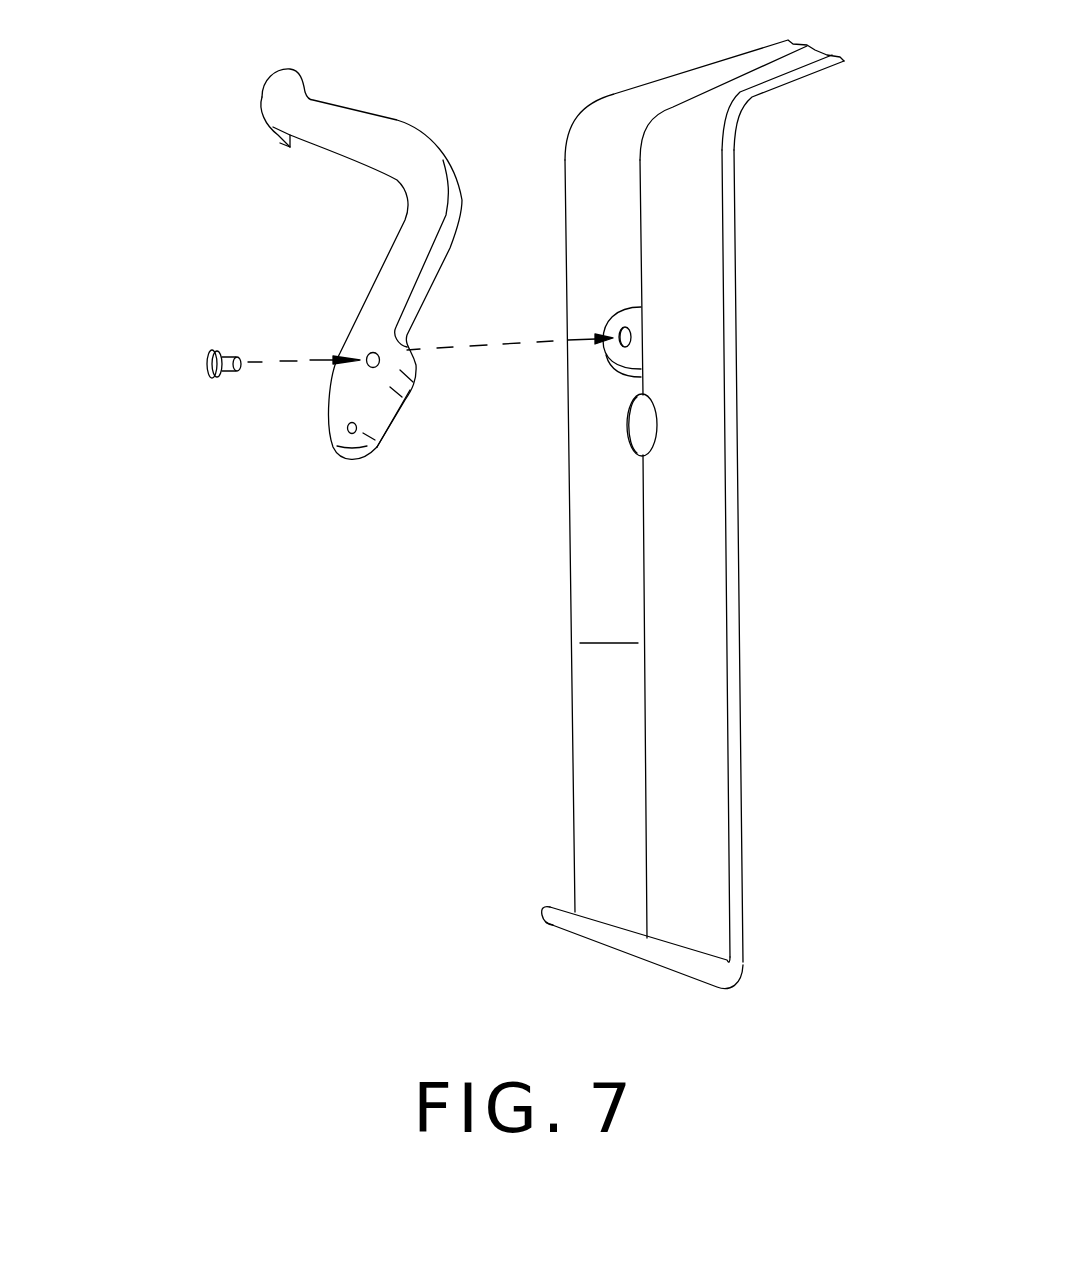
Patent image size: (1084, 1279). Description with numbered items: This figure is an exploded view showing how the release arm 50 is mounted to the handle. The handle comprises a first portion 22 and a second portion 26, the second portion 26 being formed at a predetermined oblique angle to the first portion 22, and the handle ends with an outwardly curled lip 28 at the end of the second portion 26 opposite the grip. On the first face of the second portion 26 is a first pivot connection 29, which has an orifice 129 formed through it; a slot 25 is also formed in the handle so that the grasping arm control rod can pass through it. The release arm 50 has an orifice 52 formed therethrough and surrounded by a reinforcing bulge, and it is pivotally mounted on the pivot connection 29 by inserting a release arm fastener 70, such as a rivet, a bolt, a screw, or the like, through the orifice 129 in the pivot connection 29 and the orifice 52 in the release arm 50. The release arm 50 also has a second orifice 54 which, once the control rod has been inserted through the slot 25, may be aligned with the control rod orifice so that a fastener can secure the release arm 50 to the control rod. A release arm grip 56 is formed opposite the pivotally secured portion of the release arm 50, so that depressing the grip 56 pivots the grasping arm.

The first portion 22 is at (792, 83).
The second portion 26 is at (743, 713).
The outwardly curled lip 28 is at (673, 975).
The first pivot connection 29 is at (623, 305).
The orifice 129 is at (633, 342).
The slot 25 is at (657, 425).
The release arm 50 is at (314, 274).
The release arm grip 56 is at (397, 120).
The orifice 52 is at (380, 367).
The orifice 54 is at (370, 453).
The release arm fastener 70 is at (205, 367).